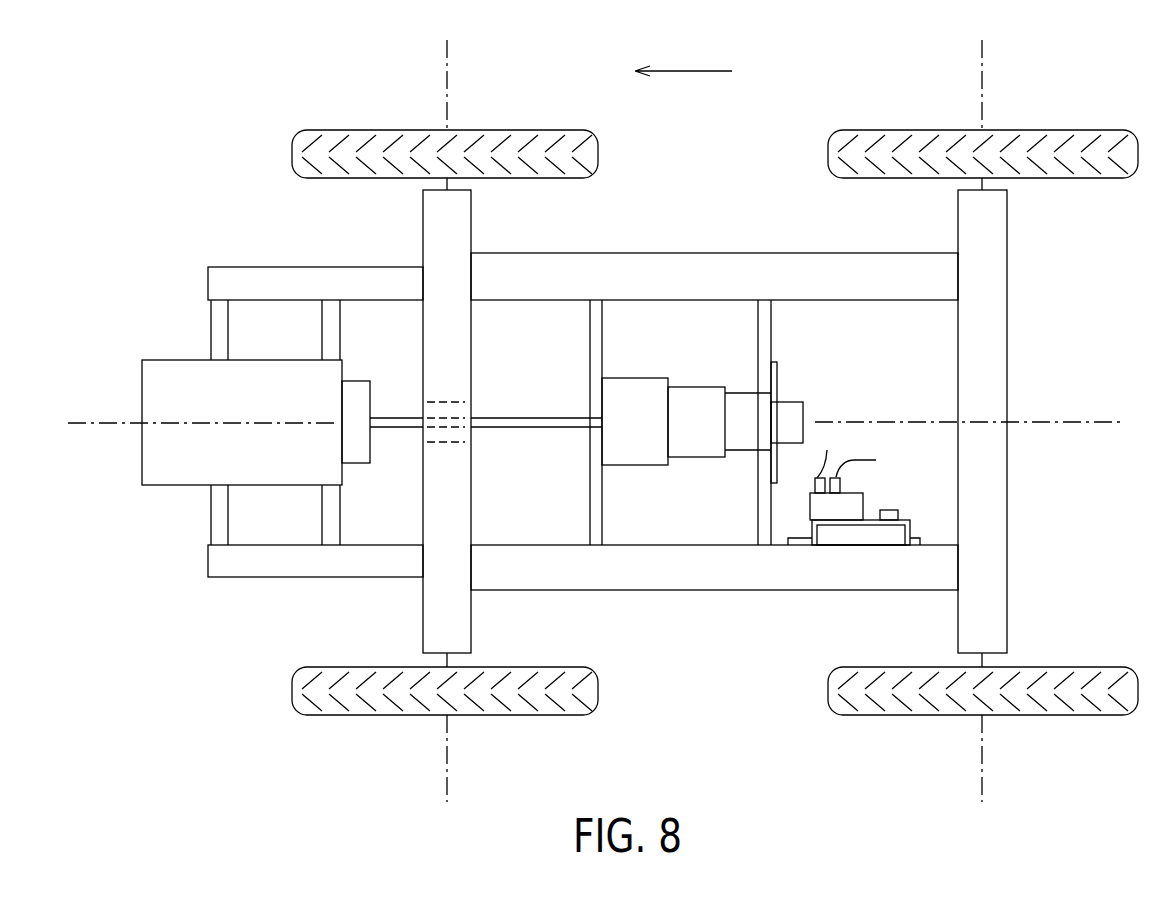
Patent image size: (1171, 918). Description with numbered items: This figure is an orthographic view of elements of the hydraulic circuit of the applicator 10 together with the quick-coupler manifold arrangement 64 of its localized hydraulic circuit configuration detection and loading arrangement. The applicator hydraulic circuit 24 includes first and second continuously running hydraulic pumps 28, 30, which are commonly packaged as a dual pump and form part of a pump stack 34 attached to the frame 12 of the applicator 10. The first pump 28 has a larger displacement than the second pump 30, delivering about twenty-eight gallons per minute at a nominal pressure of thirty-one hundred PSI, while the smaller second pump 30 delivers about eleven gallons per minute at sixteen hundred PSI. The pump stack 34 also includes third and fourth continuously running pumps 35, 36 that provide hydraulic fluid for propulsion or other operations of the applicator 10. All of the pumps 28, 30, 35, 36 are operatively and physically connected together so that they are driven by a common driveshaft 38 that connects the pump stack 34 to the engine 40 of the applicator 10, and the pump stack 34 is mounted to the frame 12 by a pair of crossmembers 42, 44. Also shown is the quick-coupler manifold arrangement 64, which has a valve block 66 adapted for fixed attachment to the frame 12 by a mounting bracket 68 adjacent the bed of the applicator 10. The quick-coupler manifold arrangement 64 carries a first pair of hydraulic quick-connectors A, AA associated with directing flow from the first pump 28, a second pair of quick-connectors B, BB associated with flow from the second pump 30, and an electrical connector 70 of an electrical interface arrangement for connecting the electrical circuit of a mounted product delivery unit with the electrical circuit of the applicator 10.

The applicator 10 is at (841, 46).
The frame 12 is at (990, 398).
The applicator hydraulic circuit 24 is at (898, 393).
The first pump 28 is at (748, 452).
The second pump 30 is at (789, 400).
The pump stack 34 is at (704, 426).
The third pump 35 is at (698, 458).
The fourth pump 36 is at (638, 466).
The driveshaft 38 is at (539, 428).
The engine 40 is at (178, 468).
The crossmember 42 is at (591, 349).
The crossmember 44 is at (766, 318).
The quick-coupler manifold arrangement 64 is at (928, 529).
The valve block 66 is at (821, 506).
The mounting bracket 68 is at (910, 540).
The electrical connector 70 is at (890, 507).